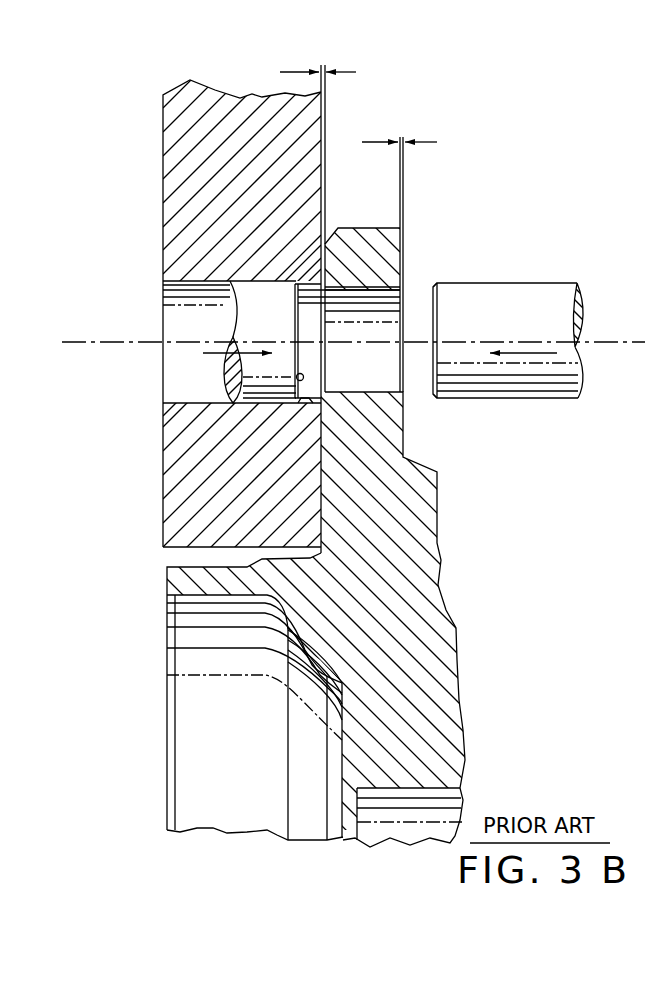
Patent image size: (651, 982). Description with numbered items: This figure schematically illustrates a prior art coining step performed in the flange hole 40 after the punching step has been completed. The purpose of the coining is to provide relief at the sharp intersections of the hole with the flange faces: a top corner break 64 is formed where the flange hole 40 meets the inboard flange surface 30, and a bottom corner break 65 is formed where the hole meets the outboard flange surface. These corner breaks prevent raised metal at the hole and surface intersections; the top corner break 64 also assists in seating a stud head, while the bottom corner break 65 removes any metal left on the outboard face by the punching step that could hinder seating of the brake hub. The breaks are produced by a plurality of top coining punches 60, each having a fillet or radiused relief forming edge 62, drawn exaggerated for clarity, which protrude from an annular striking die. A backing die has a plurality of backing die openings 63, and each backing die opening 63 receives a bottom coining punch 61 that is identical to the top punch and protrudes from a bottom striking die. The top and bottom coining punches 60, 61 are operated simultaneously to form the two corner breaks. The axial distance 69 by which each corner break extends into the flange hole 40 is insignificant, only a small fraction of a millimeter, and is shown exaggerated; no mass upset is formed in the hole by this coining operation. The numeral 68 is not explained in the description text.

The inboard flange surface 30 is at (403, 245).
The flange hole 40 is at (382, 392).
The top coining punch 60 is at (519, 283).
The bottom coining punch 61 is at (300, 380).
The fillet or radiused relief forming edge 62 is at (297, 286).
The backing die opening 63 is at (308, 400).
The top corner break 64 is at (403, 288).
The bottom corner break 65 is at (318, 288).
The sleeve 68 is at (296, 330).
The axial distance 69 is at (348, 73).